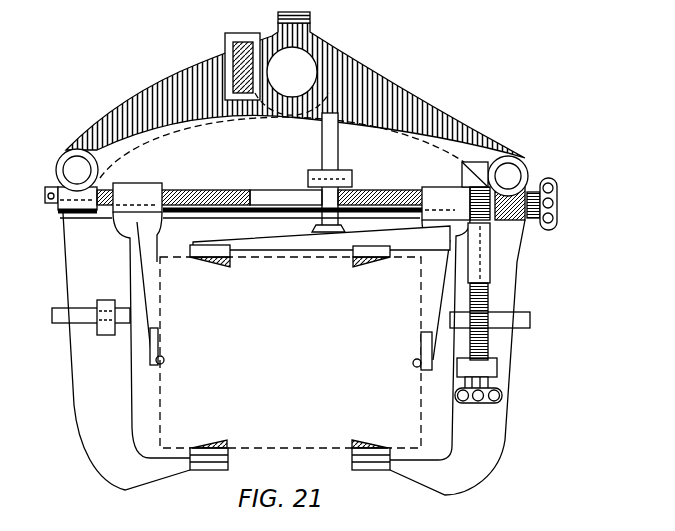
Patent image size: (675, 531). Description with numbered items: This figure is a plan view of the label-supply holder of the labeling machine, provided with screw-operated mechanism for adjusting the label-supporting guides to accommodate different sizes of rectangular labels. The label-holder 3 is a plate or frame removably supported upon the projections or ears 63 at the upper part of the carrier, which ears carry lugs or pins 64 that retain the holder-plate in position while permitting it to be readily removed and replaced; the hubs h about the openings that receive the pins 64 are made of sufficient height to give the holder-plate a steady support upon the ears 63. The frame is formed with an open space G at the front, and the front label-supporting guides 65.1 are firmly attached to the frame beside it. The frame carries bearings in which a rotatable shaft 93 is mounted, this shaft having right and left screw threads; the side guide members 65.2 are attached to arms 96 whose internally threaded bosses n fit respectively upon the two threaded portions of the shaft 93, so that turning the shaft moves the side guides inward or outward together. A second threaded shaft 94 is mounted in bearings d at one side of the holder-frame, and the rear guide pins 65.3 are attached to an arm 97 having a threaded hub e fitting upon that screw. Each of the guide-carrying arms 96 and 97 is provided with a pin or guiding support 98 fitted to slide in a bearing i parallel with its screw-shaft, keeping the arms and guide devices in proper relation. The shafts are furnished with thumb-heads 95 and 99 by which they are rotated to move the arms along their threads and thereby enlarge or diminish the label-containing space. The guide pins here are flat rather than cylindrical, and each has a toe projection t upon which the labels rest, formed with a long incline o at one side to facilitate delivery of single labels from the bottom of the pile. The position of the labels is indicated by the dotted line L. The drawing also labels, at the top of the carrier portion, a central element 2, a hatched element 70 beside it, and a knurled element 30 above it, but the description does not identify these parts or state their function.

The projections or ears 63 is at (407, 90).
The knurled cap 30 is at (305, 16).
The lever 70 is at (233, 65).
The pivot 2 is at (292, 81).
The pin or guiding support 98 is at (50, 330).
The flange block f is at (73, 200).
The lugs or pins 64 is at (77, 170).
The hubs h is at (93, 161).
The rotatable shaft 93 is at (277, 197).
The internally threaded bosses n is at (291, 201).
The bearings d is at (472, 172).
The label-holder 3 is at (294, 327).
The arms 96 is at (293, 287).
The dotted line L is at (418, 407).
The bearing i is at (301, 263).
The arm 97 is at (321, 238).
The rear guide pins 65.3 is at (222, 250).
The side guide members 65.2 is at (157, 347).
The front label-supporting guides 65.1 is at (212, 458).
The long incline o is at (289, 354).
The toe or point t is at (261, 357).
The threaded hub e is at (479, 253).
The second threaded shaft 94 is at (485, 345).
The thumb-head 99 is at (502, 398).
The thumb-head 95 is at (557, 203).
The open space G is at (290, 462).